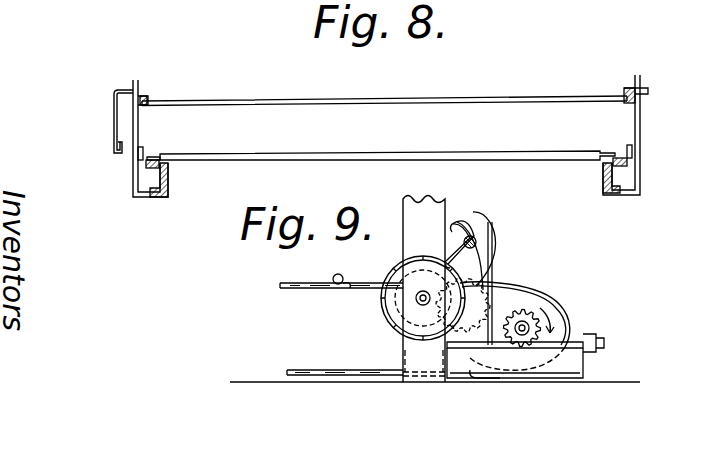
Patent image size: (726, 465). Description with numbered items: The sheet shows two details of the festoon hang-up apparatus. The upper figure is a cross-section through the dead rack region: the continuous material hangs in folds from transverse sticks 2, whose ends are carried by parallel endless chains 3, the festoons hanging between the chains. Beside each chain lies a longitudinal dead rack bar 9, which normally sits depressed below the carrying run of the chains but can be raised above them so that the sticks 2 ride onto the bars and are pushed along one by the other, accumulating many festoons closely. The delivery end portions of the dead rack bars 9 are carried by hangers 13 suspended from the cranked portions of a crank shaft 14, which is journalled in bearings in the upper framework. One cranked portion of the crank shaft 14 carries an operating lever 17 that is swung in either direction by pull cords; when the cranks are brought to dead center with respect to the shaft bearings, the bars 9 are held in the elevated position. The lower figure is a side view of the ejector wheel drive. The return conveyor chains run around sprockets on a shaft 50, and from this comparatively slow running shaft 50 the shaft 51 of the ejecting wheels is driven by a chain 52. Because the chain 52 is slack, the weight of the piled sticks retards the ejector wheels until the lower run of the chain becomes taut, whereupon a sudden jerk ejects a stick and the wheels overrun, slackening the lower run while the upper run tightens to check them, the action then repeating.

In FIG. 8, the sticks 2 is at (547, 156).
In FIG. 8, the endless chains 3 is at (158, 166).
In FIG. 8, the dead rack bars 9 is at (170, 182).
In FIG. 8, the hangers 13 is at (136, 138).
In FIG. 8, the crank shaft 14 is at (268, 100).
In FIG. 8, the operating lever 17 is at (115, 138).
In FIG. 9, the shaft 50 is at (528, 311).
In FIG. 9, the shaft of the ejecting wheels 51 is at (418, 303).
In FIG. 9, the chain 52 is at (482, 293).